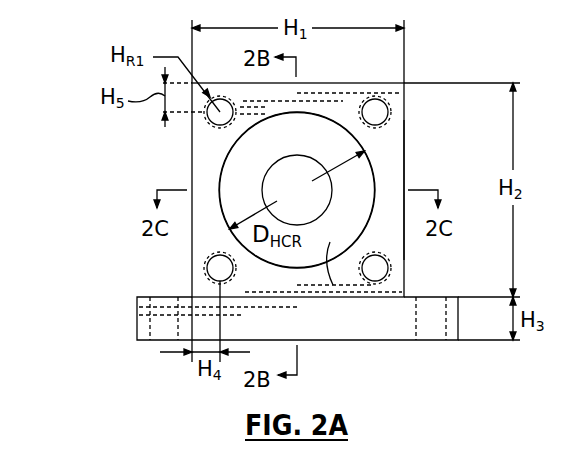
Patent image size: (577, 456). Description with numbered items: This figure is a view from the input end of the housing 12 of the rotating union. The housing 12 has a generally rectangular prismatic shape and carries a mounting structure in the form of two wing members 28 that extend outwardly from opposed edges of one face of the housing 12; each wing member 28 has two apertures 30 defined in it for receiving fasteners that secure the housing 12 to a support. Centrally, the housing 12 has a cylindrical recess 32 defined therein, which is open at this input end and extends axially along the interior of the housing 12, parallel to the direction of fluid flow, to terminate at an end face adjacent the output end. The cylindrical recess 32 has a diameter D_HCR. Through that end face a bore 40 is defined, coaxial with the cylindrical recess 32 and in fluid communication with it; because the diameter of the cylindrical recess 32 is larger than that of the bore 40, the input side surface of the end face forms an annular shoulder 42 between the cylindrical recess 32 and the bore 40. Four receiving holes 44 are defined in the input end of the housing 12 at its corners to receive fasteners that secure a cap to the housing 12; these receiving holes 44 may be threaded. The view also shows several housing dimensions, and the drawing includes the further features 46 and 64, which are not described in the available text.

The housing 12 is at (203, 162).
The wing members 28 is at (137, 312).
The apertures 30 is at (157, 296).
The cylindrical recess 32 is at (347, 128).
The bore 40 is at (311, 203).
The annular shoulder 42 is at (311, 153).
The receiving holes 44 is at (218, 113).
The slot 46 is at (333, 285).
The side face 64 is at (403, 179).